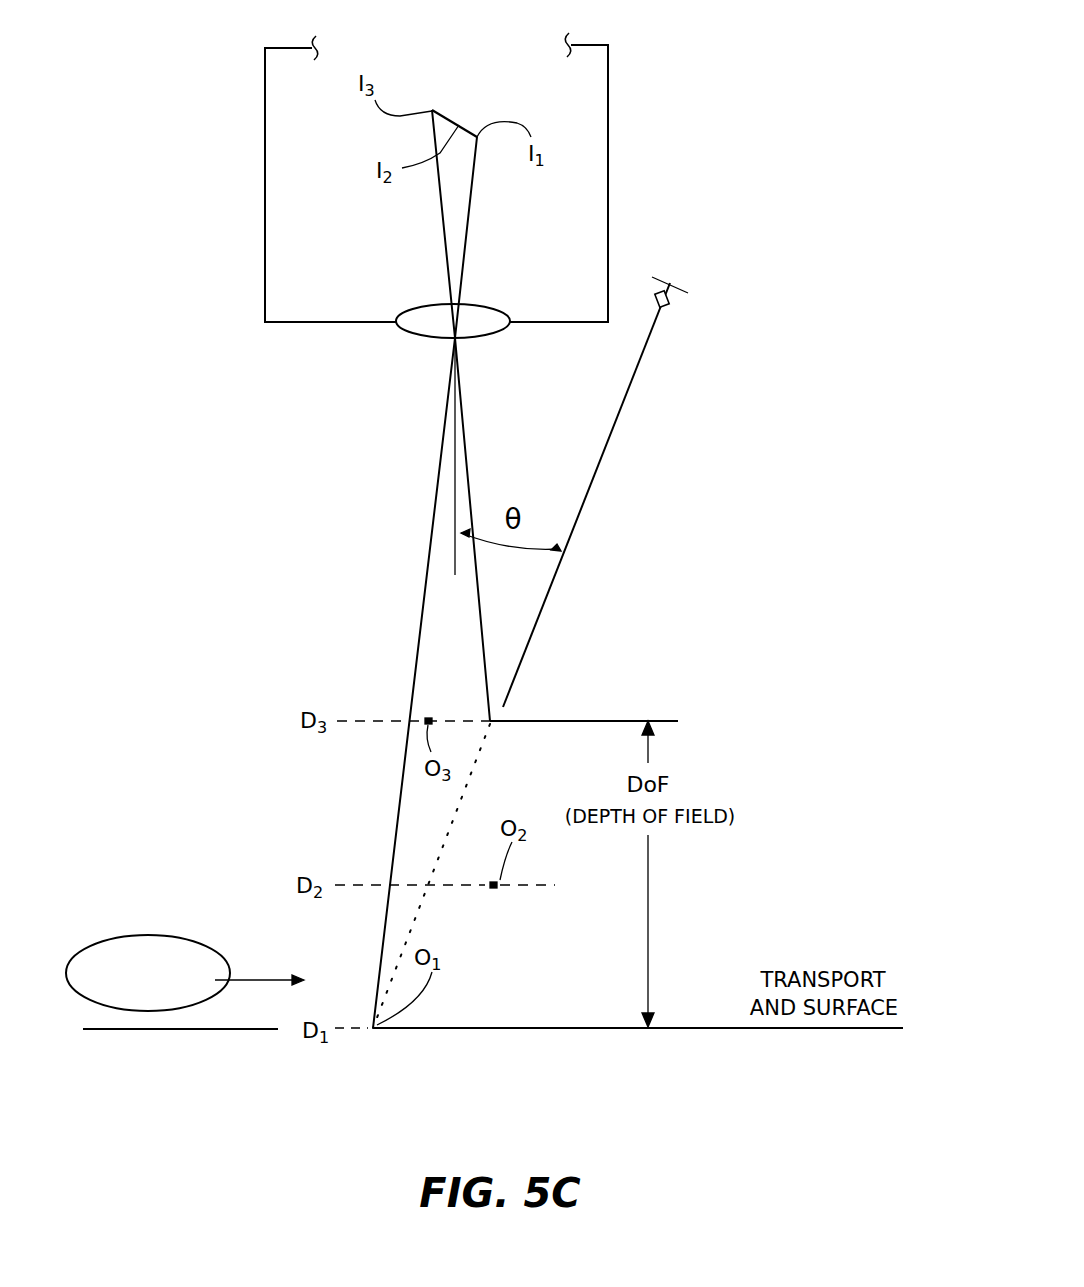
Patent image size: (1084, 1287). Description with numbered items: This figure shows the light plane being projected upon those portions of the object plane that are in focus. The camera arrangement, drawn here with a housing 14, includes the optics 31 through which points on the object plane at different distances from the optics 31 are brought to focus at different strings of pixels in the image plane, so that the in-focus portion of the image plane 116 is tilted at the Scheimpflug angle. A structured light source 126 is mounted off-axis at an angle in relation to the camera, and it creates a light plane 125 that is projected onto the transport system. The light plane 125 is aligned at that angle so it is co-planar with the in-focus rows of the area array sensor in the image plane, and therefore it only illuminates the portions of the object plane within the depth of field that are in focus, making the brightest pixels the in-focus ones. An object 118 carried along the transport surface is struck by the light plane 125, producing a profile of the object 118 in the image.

The camera housing 14 is at (593, 120).
The image of object 116 is at (450, 117).
The optics 31 is at (483, 305).
The structured light source 126 is at (683, 288).
The light plane 125 is at (602, 460).
The object 118 is at (155, 1000).